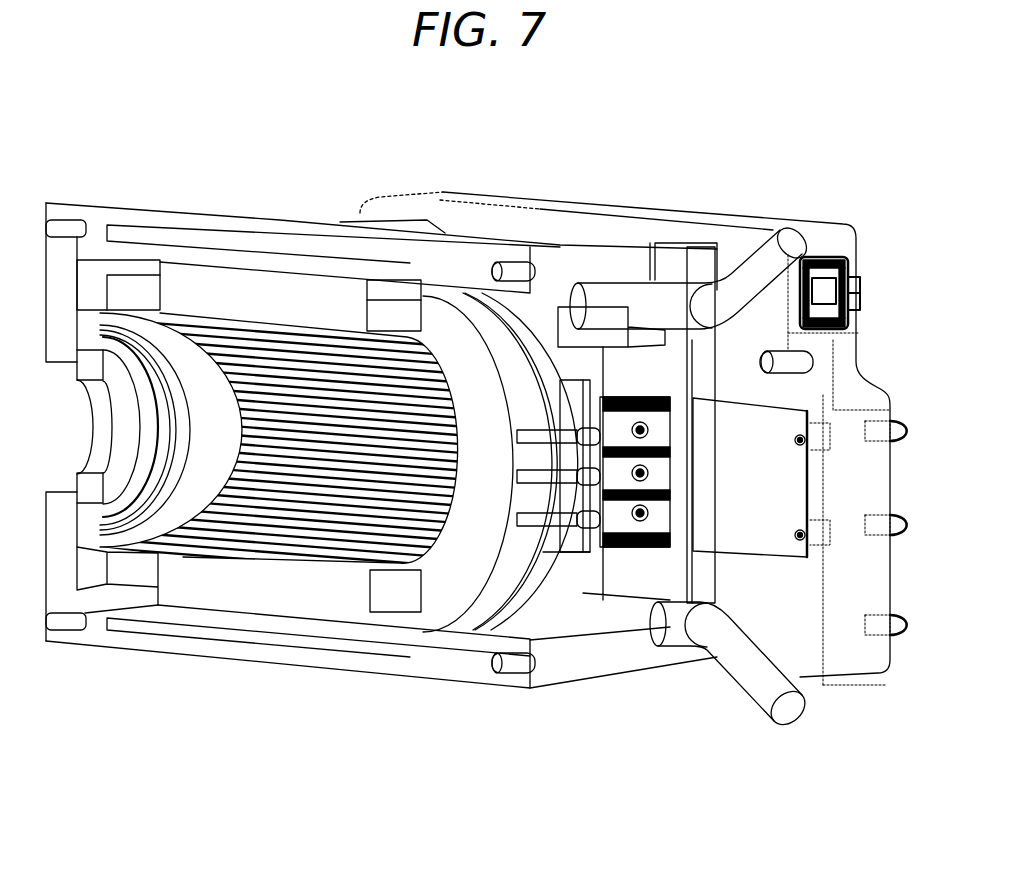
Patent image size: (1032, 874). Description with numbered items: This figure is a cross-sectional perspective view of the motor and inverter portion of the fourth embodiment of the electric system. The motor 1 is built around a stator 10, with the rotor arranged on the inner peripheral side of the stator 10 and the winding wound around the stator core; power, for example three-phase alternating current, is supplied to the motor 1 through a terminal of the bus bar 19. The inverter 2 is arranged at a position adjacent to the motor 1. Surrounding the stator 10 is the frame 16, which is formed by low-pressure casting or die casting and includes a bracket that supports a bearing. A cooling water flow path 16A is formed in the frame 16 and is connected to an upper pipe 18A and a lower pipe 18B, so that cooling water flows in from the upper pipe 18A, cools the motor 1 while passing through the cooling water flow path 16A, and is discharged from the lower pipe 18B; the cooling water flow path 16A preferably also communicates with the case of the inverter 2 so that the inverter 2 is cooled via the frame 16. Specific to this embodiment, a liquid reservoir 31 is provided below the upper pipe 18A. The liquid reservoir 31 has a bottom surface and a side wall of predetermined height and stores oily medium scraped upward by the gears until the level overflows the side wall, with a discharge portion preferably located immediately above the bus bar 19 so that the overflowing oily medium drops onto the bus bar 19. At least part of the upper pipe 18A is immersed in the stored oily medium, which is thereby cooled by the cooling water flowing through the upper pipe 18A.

The motor 1 is at (82, 202).
The inverter 2 is at (537, 193).
The stator 10 is at (177, 273).
The frame 16 is at (125, 205).
The cooling water flow path 16A is at (192, 228).
The upper pipe 18A is at (788, 240).
The lower pipe 18B is at (785, 715).
The bus bar 19 is at (668, 392).
The liquid reservoir 31 is at (597, 318).